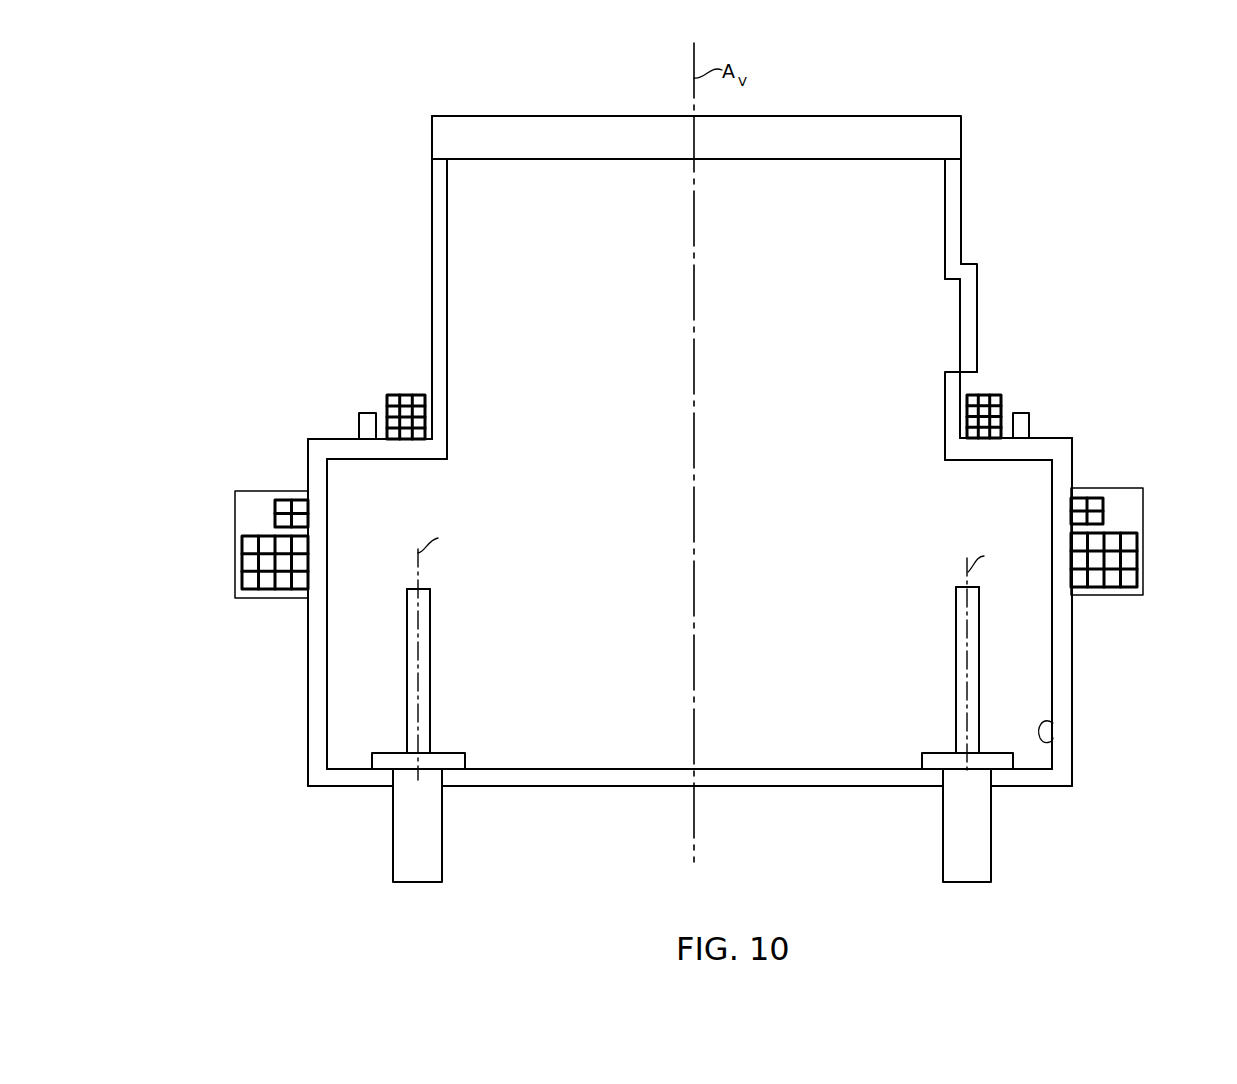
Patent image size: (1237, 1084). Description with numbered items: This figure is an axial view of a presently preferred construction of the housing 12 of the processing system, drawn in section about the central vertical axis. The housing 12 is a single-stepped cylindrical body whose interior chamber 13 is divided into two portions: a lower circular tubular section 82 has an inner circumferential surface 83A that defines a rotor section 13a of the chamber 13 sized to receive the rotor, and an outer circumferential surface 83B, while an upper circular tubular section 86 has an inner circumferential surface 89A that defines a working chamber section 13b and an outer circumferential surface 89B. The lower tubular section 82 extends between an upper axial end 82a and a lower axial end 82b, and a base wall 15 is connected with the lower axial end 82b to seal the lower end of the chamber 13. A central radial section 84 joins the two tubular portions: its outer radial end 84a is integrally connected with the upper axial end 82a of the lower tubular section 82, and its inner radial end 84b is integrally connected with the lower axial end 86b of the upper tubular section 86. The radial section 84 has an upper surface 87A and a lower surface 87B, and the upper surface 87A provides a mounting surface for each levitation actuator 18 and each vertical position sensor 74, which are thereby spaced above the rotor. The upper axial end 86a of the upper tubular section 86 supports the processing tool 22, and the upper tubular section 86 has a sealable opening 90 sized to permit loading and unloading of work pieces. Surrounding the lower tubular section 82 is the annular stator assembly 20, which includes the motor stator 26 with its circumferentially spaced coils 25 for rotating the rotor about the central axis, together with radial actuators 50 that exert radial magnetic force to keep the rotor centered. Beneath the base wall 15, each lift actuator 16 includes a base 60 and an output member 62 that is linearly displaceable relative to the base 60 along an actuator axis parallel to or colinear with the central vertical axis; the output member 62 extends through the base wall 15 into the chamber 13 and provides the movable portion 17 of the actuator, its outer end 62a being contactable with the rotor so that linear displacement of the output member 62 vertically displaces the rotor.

The housing 12 is at (345, 250).
The interior chamber 13 is at (893, 235).
The rotor section 13a is at (803, 729).
The working chamber section 13b is at (473, 190).
The base wall 15 is at (580, 790).
The lift actuator 16 is at (679, 817).
The movable portion 17 is at (707, 653).
The levitation actuator 18 is at (390, 383).
The stator assembly 20 is at (699, 548).
The processing tool 22 is at (873, 113).
The coils 25 is at (687, 588).
The motor stator 26 is at (1137, 572).
The radial actuator 50 is at (280, 507).
The base 60 is at (440, 836).
The output member 62 is at (432, 711).
The outer end 62a is at (430, 590).
The vertical position sensor 74 is at (366, 413).
The lower circular tubular section 82 is at (1102, 607).
The upper axial end 82a is at (1060, 462).
The lower axial end 82b is at (1060, 767).
The inner circumferential surface 83A is at (1053, 723).
The outer circumferential surface 83B is at (1073, 672).
The central radial section 84 is at (1044, 438).
The outer radial end 84a is at (1062, 440).
The inner radial end 84b is at (958, 458).
The upper circular tubular section 86 is at (966, 235).
The upper axial end 86a is at (433, 166).
The lower axial end 86b is at (440, 438).
The upper surface 87A is at (334, 439).
The lower surface 87B is at (380, 460).
The inner circumferential surface 89A is at (447, 295).
The outer circumferential surface 89B is at (432, 256).
The sealable opening 90 is at (973, 300).